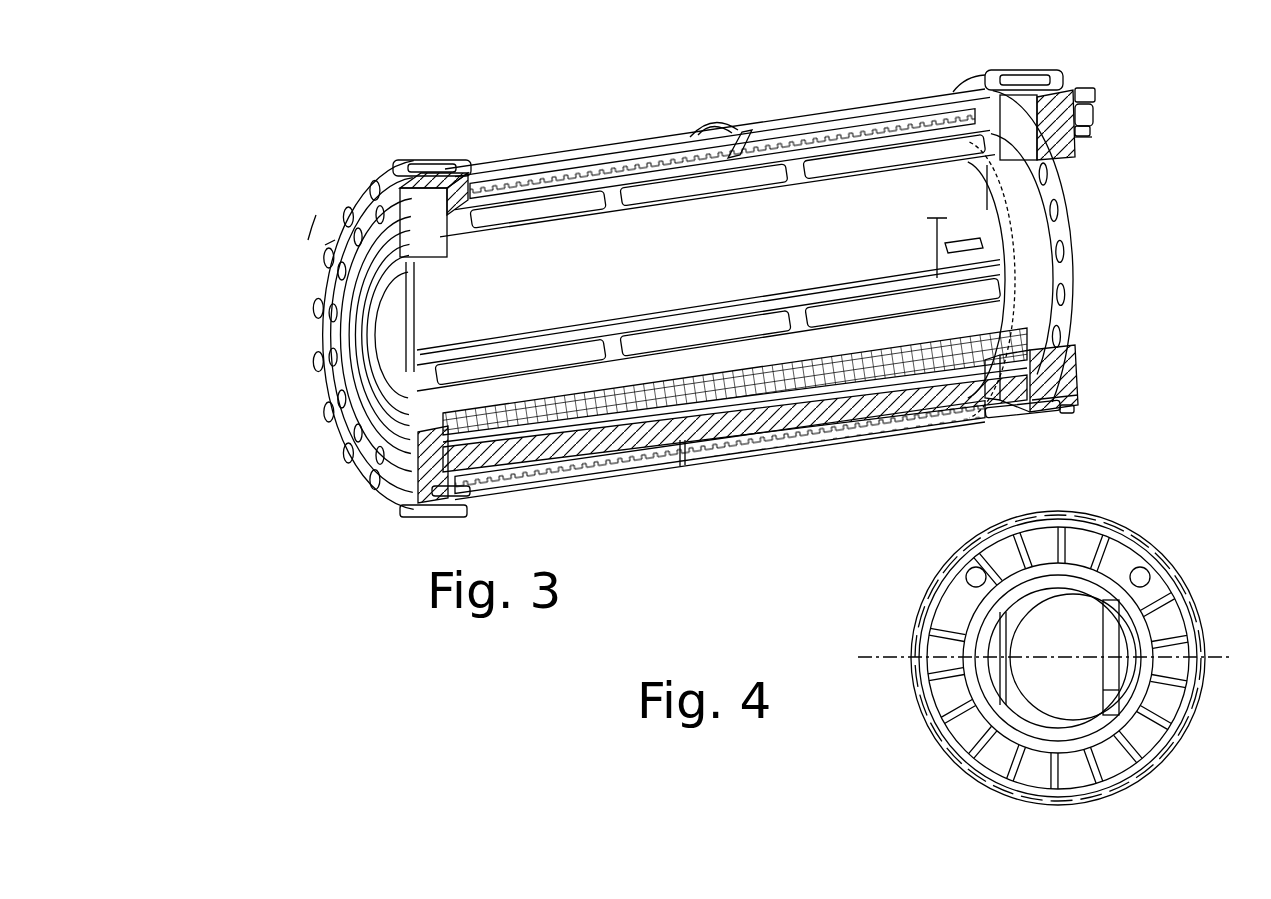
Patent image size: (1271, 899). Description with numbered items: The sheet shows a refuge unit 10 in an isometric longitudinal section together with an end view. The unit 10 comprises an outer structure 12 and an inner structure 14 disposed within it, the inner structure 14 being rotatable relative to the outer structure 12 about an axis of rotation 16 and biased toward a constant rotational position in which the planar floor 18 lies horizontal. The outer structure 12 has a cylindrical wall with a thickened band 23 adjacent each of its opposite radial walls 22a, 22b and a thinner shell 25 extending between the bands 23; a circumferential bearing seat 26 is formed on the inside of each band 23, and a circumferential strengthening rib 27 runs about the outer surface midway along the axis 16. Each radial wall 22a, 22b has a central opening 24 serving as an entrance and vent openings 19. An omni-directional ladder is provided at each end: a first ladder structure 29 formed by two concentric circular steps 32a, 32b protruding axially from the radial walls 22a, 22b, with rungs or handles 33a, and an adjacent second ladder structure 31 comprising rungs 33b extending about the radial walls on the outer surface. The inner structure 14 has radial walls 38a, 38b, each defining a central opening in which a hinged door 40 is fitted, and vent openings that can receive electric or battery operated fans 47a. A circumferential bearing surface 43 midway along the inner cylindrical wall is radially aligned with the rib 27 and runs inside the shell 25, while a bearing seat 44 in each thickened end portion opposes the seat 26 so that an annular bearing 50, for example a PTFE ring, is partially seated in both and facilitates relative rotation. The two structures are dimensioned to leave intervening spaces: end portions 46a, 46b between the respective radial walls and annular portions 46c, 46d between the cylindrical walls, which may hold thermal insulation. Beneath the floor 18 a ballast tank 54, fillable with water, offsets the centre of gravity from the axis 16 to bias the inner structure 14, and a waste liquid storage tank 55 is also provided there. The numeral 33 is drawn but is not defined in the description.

In FIG. 4, the refuge unit 10 is at (1141, 530).
In FIG. 3, the outer structure 12 is at (597, 156).
In FIG. 4, the outer structure 12 is at (990, 644).
In FIG. 3, the inner structure 14 is at (358, 312).
In FIG. 4, the axis of rotation 16 is at (883, 651).
In FIG. 3, the floor 18 is at (857, 322).
In FIG. 4, the vent openings 19 is at (961, 580).
In FIG. 3, the radial wall 22a is at (1082, 134).
In FIG. 3, the radial wall 22b is at (345, 284).
In FIG. 3, the thickened band 23 is at (472, 488).
In FIG. 3, the central opening 24 is at (310, 415).
In FIG. 3, the shell 25 is at (550, 164).
In FIG. 3, the bearing seat 26 is at (447, 488).
In FIG. 3, the strengthening rib 27 is at (696, 126).
In FIG. 3, the first ladder structure 29 is at (316, 397).
In FIG. 3, the second ladder structure 31 is at (410, 163).
In FIG. 4, the second ladder structure 31 is at (955, 769).
In FIG. 3, the circular step 32a is at (318, 246).
In FIG. 3, the circular step 32b is at (318, 214).
In FIG. 3, the bolt 33 is at (1074, 418).
In FIG. 4, the rungs or handles 33a is at (975, 748).
In FIG. 3, the rungs 33b is at (437, 158).
In FIG. 3, the radial wall 38a is at (1040, 344).
In FIG. 3, the radial wall 38b is at (418, 432).
In FIG. 3, the door 40 is at (1013, 272).
In FIG. 4, the door 40 is at (1062, 689).
In FIG. 3, the circumferential bearing surface 43 is at (739, 150).
In FIG. 3, the bearing seat 44 is at (1029, 393).
In FIG. 3, the end portion of space 46a is at (1054, 374).
In FIG. 3, the end portion of space 46b is at (418, 472).
In FIG. 3, the annular portion of space 46c is at (594, 473).
In FIG. 3, the annular portion of space 46d is at (795, 449).
In FIG. 3, the fans 47a is at (987, 210).
In FIG. 3, the annular bearing 50 is at (457, 188).
In FIG. 3, the ballast tank 54 is at (748, 414).
In FIG. 3, the waste liquid storage tank 55 is at (642, 432).